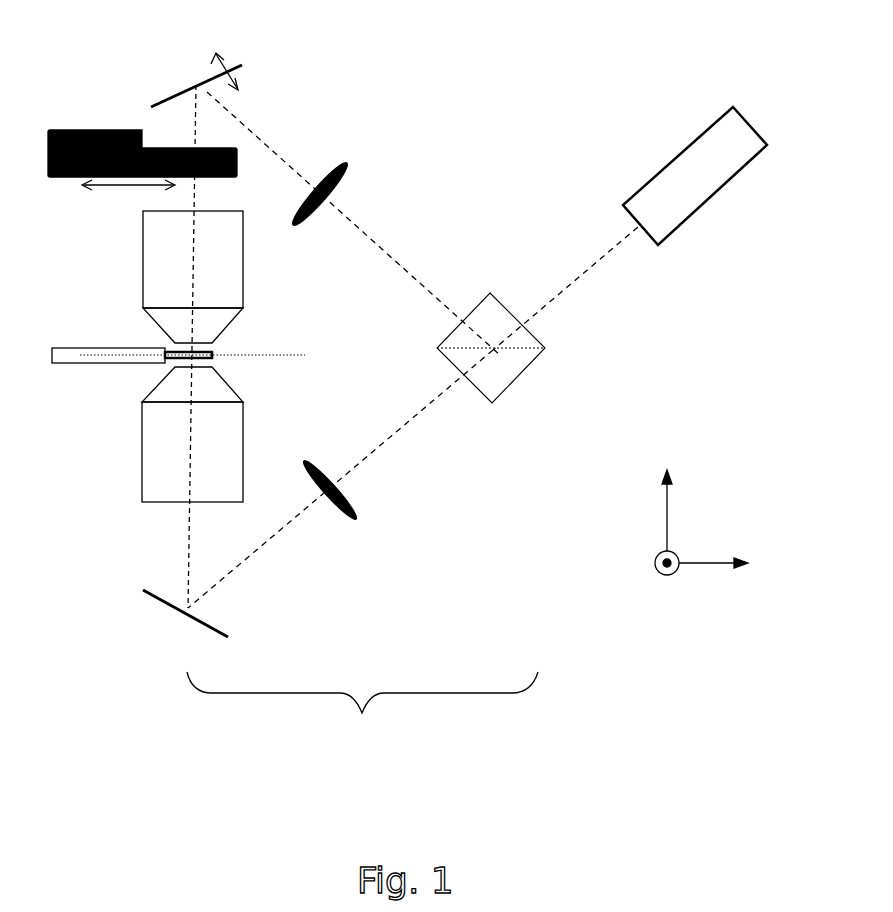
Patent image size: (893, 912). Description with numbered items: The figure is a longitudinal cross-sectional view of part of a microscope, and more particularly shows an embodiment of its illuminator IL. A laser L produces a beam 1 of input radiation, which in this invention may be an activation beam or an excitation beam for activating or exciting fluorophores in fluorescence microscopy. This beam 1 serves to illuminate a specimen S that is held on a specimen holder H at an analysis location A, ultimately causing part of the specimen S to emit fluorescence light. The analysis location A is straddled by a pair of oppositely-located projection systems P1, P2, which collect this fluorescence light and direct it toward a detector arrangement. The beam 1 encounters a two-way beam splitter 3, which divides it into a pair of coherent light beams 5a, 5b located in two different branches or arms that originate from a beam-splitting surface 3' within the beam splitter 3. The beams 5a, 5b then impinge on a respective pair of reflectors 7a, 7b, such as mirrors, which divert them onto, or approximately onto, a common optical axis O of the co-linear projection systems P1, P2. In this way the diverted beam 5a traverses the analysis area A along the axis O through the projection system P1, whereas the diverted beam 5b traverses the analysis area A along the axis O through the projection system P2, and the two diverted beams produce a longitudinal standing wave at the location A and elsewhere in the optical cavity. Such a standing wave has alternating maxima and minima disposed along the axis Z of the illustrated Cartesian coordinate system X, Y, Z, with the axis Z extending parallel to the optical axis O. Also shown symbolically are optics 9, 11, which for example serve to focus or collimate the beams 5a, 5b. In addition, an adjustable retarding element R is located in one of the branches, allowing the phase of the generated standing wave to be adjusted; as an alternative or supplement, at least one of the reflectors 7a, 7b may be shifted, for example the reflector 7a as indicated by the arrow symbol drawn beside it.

The adjustable retarding element R is at (84, 148).
The reflector 7a is at (228, 96).
The coherent light beam 5a is at (395, 260).
The optics 9 is at (330, 163).
The laser L is at (675, 208).
The beam 1 is at (586, 270).
The coherent light beam 5b is at (397, 431).
The two-way beam splitter 3 is at (491, 404).
The beam-splitting surface 3' is at (517, 373).
The projection system P1 is at (155, 265).
The projection system P2 is at (152, 476).
The specimen holder H is at (70, 361).
The specimen S is at (217, 358).
The analysis location A is at (256, 342).
The optics 11 is at (334, 510).
The reflector 7b is at (213, 618).
The common optical axis O is at (188, 532).
The illuminator IL is at (362, 716).
The Z axis Z is at (651, 501).
The Y axis Y is at (717, 588).
The X axis X is at (655, 584).